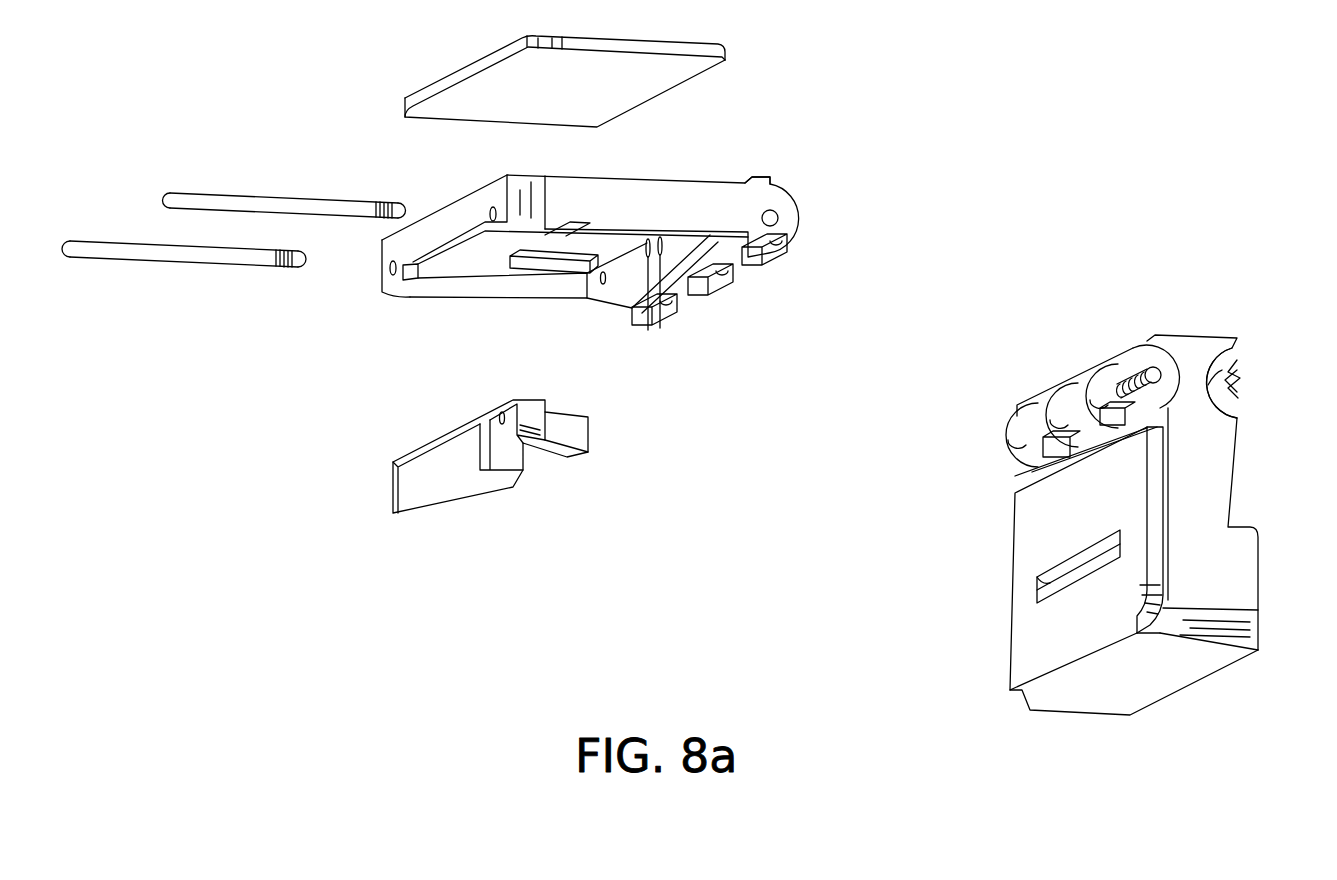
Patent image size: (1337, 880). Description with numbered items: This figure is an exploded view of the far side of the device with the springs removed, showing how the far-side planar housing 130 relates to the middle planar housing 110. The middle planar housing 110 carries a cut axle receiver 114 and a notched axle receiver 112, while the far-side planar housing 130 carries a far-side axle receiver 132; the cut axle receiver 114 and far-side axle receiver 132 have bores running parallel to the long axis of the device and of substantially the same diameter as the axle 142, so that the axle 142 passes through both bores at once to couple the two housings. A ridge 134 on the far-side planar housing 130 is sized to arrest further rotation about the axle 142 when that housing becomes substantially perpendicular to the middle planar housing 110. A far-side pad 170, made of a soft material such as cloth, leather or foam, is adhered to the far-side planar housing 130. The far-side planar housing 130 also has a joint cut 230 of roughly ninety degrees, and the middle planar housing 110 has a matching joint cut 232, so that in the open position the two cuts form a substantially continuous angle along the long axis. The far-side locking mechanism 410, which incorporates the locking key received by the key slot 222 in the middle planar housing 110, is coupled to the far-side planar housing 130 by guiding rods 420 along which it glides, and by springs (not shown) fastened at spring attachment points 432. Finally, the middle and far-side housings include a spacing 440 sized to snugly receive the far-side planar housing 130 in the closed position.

The middle planar housing 110 is at (1192, 338).
The notched axle receiver 112 is at (1216, 384).
The cut axle receiver 114 is at (1109, 380).
The far-side planar housing 130 is at (781, 197).
The far-side axle receiver 132 is at (781, 221).
The ridge 134 is at (766, 181).
The axle 142 is at (1146, 366).
The far-side pad 170 is at (510, 87).
The key slot 222 is at (1072, 570).
The joint cut 230 is at (762, 256).
The joint cut 232 is at (1027, 458).
The far-side locking mechanism 410 is at (410, 481).
The guiding rod 420 is at (229, 194).
The spring attachment point 432 is at (660, 328).
The spacing 440 is at (479, 293).